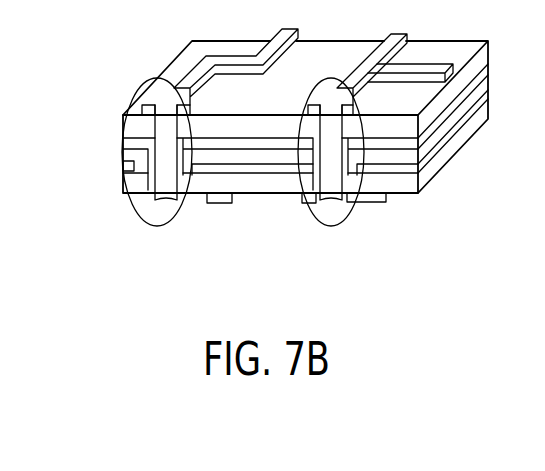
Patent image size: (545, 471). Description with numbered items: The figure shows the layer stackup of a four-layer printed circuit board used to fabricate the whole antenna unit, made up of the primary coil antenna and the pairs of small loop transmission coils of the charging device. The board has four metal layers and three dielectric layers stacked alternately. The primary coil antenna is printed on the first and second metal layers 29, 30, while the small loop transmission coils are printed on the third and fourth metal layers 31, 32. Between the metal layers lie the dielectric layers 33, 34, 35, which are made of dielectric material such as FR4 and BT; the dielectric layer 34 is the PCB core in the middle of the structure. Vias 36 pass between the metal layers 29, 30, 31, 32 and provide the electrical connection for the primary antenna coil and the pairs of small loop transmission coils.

The first metal layer 29 is at (101, 107).
The second metal layer 30 is at (101, 139).
The third metal layer 31 is at (101, 164).
The fourth metal layer 32 is at (101, 195).
The dielectric layer 33 is at (470, 86).
The dielectric layer 34 is at (470, 118).
The dielectric layer 35 is at (470, 147).
The vias 36 is at (307, 212).